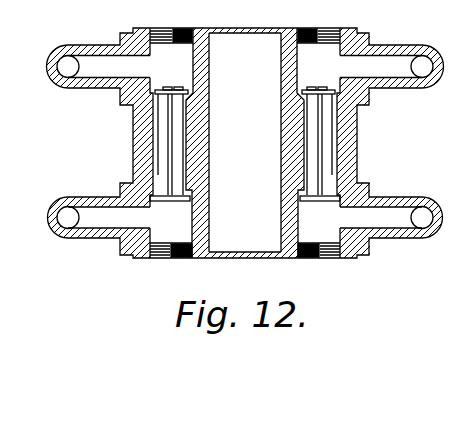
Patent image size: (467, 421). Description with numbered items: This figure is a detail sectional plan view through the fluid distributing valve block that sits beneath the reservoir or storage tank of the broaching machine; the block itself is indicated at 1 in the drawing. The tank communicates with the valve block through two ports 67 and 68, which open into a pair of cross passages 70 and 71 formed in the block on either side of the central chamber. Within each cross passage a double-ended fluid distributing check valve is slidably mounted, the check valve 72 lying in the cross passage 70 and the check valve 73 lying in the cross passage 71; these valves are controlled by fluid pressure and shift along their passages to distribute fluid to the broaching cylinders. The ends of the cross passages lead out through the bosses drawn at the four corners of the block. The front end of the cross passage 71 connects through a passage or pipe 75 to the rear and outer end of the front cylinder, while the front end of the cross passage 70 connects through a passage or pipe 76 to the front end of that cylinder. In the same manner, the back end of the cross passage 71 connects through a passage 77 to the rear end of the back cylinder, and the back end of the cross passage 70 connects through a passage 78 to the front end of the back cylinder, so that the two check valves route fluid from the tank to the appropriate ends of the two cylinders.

The valve body 1 is at (257, 27).
The port 67 is at (196, 140).
The port 68 is at (299, 140).
The cross passage 70 is at (158, 143).
The cross passage 71 is at (335, 140).
The double-ended fluid distributing check valve 72 is at (165, 203).
The double-ended fluid distributing check valve 73 is at (312, 202).
The passage or pipe 75 is at (392, 223).
The passage or pipe 76 is at (98, 219).
The passage 77 is at (384, 67).
The passage 78 is at (88, 64).